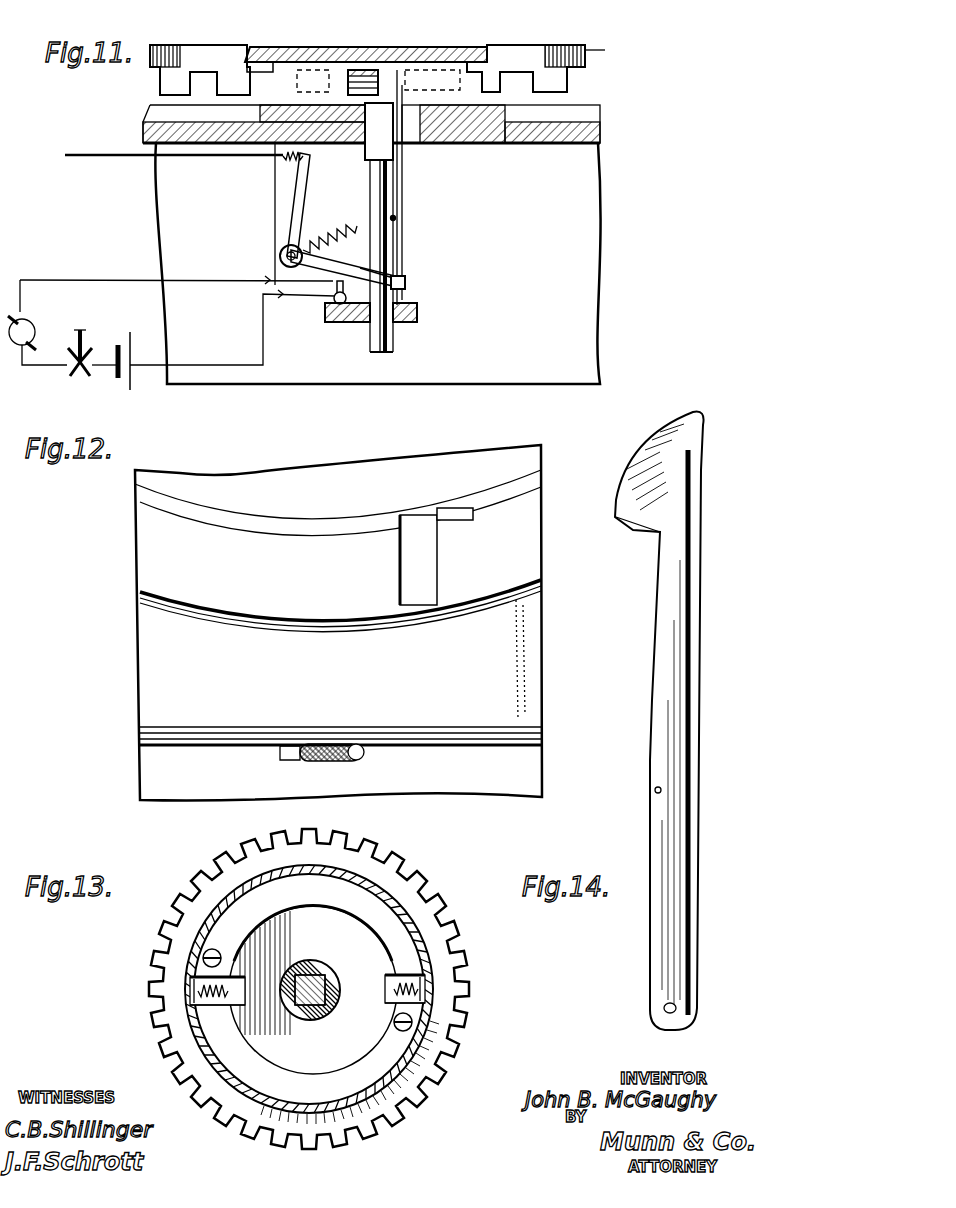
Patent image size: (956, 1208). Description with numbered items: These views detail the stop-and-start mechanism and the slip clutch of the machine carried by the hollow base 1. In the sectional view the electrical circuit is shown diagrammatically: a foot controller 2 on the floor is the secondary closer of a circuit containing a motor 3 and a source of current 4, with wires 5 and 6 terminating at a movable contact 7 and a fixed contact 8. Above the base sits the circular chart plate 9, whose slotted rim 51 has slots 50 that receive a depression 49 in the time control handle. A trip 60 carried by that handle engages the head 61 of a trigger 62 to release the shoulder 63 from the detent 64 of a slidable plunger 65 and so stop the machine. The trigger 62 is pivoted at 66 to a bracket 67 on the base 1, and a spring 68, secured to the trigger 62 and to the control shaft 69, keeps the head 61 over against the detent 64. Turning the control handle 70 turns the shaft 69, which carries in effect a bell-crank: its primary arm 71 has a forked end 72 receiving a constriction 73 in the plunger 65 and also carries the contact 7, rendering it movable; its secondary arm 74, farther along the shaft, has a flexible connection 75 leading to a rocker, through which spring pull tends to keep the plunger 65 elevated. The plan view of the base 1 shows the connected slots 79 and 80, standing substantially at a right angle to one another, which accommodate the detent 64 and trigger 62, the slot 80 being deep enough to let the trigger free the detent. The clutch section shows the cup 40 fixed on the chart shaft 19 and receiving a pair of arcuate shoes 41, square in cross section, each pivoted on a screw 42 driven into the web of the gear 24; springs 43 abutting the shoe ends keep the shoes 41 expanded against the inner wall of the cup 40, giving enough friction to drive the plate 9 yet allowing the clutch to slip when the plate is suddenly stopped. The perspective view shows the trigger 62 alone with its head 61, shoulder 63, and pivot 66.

In FIG. 11, the hollow base 1 is at (150, 120).
In FIG. 11, the foot controller 2 is at (84, 328).
In FIG. 11, the motor 3 is at (30, 325).
In FIG. 11, the source of current 4 is at (118, 390).
In FIG. 11, the wire 5 is at (218, 278).
In FIG. 11, the wire 6 is at (222, 360).
In FIG. 11, the movable contact 7 is at (336, 291).
In FIG. 12, the movable contact 7 is at (525, 658).
In FIG. 11, the fixed contact 8 is at (334, 300).
In FIG. 11, the circular chart plate 9 is at (601, 51).
In FIG. 13, the chart shaft 19 is at (326, 1003).
In FIG. 13, the gear 24 is at (390, 862).
In FIG. 13, the cup 40 is at (395, 905).
In FIG. 13, the arcuate shoes 41 is at (390, 937).
In FIG. 13, the screw 42 is at (200, 957).
In FIG. 13, the springs 43 is at (194, 992).
In FIG. 11, the depression 49 is at (362, 70).
In FIG. 11, the slots 50 is at (205, 85).
In FIG. 11, the slotted rim 51 is at (505, 80).
In FIG. 11, the trip 60 is at (348, 86).
In FIG. 11, the head 61 is at (378, 122).
In FIG. 14, the head 61 is at (638, 512).
In FIG. 11, the trigger 62 is at (398, 183).
In FIG. 14, the trigger 62 is at (678, 716).
In FIG. 11, the shoulder 63 is at (440, 135).
In FIG. 14, the shoulder 63 is at (638, 535).
In FIG. 11, the detent 64 is at (393, 150).
In FIG. 11, the slidable plunger 65 is at (387, 212).
In FIG. 11, the pivot 66 is at (405, 325).
In FIG. 14, the pivot 66 is at (690, 1018).
In FIG. 11, the bracket 67 is at (418, 313).
In FIG. 11, the spring 68 is at (335, 240).
In FIG. 11, the control shaft 69 is at (280, 258).
In FIG. 12, the control handle 70 is at (345, 762).
In FIG. 11, the primary arm 71 is at (335, 258).
In FIG. 11, the forked end 72 is at (406, 283).
In FIG. 11, the constriction 73 is at (395, 270).
In FIG. 11, the secondary arm 74 is at (310, 190).
In FIG. 11, the flexible connection 75 is at (196, 159).
In FIG. 12, the slot 79 is at (400, 575).
In FIG. 12, the slot 80 is at (447, 510).